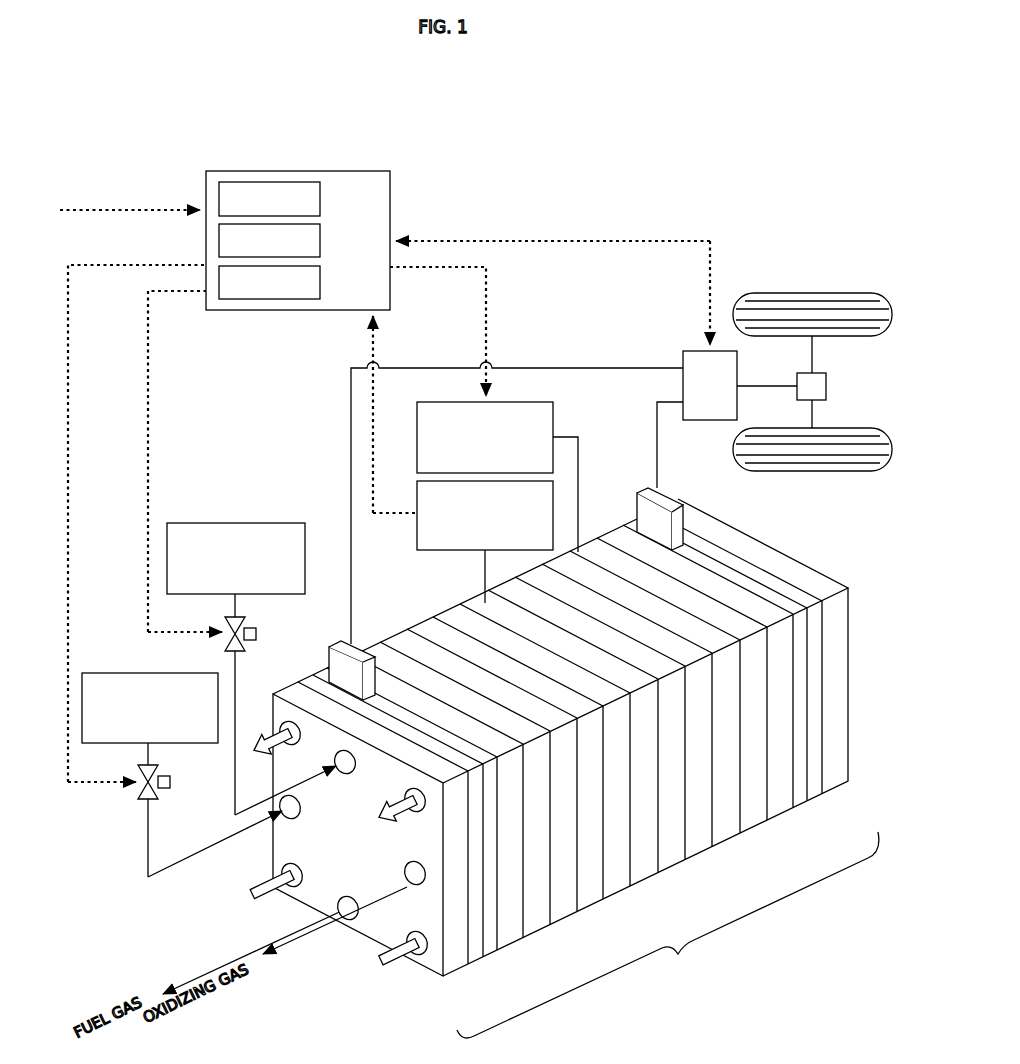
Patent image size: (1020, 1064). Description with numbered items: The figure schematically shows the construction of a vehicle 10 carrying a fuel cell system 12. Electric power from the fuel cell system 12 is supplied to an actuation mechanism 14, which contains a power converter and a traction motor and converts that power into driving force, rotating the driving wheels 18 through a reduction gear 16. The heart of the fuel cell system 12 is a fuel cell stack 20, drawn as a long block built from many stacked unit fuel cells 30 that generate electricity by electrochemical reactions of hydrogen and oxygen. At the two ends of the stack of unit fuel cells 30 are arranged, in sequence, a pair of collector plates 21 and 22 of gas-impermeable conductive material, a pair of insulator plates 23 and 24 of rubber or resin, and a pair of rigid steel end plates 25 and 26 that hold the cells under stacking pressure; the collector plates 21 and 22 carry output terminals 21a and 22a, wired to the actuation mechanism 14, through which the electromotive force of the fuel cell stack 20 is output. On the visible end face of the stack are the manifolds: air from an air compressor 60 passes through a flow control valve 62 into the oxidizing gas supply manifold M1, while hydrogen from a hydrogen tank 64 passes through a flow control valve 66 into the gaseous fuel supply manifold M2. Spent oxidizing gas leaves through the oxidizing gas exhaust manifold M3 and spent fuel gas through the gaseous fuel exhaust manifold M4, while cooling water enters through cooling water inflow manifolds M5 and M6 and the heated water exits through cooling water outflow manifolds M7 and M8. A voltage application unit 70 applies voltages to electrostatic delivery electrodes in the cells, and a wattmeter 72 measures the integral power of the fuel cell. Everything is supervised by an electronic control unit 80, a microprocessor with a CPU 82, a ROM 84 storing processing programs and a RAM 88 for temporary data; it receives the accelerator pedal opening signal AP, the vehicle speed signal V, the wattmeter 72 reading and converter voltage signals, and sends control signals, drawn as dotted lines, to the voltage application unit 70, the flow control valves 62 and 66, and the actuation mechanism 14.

The vehicle 10 is at (598, 192).
The fuel cell system 12 is at (779, 944).
The actuation mechanism 14 is at (710, 420).
The reduction gear 16 is at (797, 376).
The driving wheels 18 is at (822, 364).
The fuel cell stack 20 is at (668, 935).
The collector plate 21 is at (498, 946).
The output terminal 21a is at (366, 650).
The collector plate 22 is at (805, 800).
The output terminal 22a is at (642, 492).
The insulator plate 23 is at (480, 958).
The insulator plate 24 is at (822, 776).
The end plate 25 is at (455, 970).
The end plate 26 is at (840, 750).
The unit fuel cell 30 is at (698, 840).
The air compressor 60 is at (108, 673).
The flow control valve 62 is at (170, 782).
The hydrogen tank 64 is at (236, 523).
The flow control valve 66 is at (256, 634).
The voltage application unit 70 is at (555, 418).
The wattmeter 72 is at (415, 540).
The electronic control unit 80 is at (258, 233).
The CPU 82 is at (320, 200).
The ROM 84 is at (320, 241).
The RAM 88 is at (320, 283).
The oxidizing gas supply manifold M1 is at (276, 821).
The gaseous fuel supply manifold M2 is at (345, 775).
The oxidizing gas exhaust manifold M3 is at (409, 874).
The gaseous fuel exhaust manifold M4 is at (346, 920).
The cooling water inflow manifold M5 is at (292, 865).
The cooling water inflow manifold M6 is at (416, 960).
The cooling water outflow manifold M7 is at (282, 731).
The cooling water outflow manifold M8 is at (409, 796).